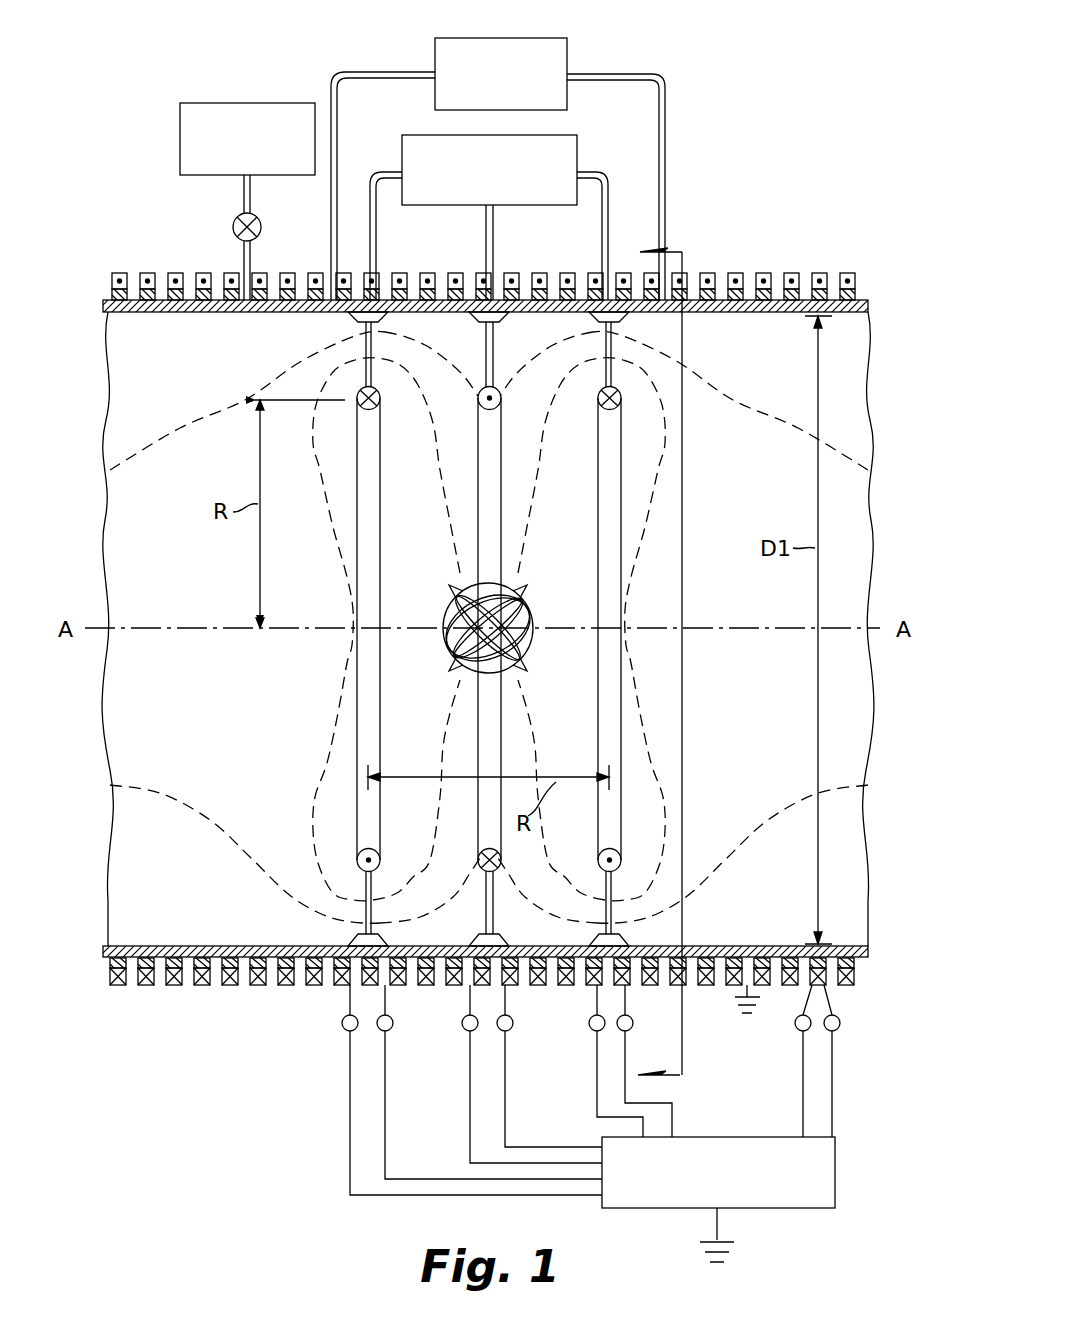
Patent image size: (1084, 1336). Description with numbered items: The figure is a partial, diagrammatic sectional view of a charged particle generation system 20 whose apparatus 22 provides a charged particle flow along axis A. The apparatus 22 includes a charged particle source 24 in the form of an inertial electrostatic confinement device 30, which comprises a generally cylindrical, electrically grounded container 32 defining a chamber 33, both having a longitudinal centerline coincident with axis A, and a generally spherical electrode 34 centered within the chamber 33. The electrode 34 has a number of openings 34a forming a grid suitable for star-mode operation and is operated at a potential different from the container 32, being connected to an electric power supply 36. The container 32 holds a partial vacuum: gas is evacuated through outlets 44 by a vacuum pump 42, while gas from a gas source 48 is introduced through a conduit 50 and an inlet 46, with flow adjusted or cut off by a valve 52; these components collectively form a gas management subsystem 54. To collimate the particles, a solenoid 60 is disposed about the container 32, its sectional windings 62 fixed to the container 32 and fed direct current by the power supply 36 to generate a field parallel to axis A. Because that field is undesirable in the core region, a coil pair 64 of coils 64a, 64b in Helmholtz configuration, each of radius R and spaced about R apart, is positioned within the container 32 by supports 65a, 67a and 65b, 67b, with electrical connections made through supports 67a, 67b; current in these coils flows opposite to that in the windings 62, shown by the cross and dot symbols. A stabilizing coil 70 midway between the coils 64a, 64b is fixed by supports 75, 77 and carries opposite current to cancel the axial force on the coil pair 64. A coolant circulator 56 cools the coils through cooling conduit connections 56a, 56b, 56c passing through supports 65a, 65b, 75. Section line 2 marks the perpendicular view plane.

The charged particle generation system 20 is at (745, 20).
The apparatus 22 is at (752, 246).
The charged particle source 24 is at (215, 986).
The inertial electrostatic confinement device 30 is at (133, 558).
The container 32 is at (492, 290).
The chamber 33 is at (118, 298).
The electrode 34 is at (480, 585).
The openings 34a is at (513, 605).
The electric power supply 36 is at (740, 1136).
The vacuum pump 42 is at (567, 62).
The outlets 44 is at (338, 140).
The inlet 46 is at (252, 266).
The gas source 48 is at (178, 130).
The conduit 50 is at (243, 198).
The valve 52 is at (262, 232).
The gas management subsystem 54 is at (766, 150).
The coolant circulator 56 is at (578, 158).
The cooling conduit connection 56a is at (376, 230).
The cooling conduit connection 56b is at (494, 218).
The cooling conduit connection 56c is at (609, 198).
The solenoid 60 is at (848, 268).
The sectional windings 62 is at (150, 272).
The coil pair 64 is at (642, 805).
The coil 64a is at (356, 470).
The coil 64b is at (622, 450).
The support/mount 65a is at (366, 347).
The support/mount 65b is at (652, 346).
The support/mount 67a is at (360, 913).
The support/mount 67b is at (628, 924).
The stabilizing coil 70 is at (502, 402).
The support/mount 75 is at (481, 375).
The support/mount 77 is at (482, 895).
The section line 2- 2 is at (673, 667).